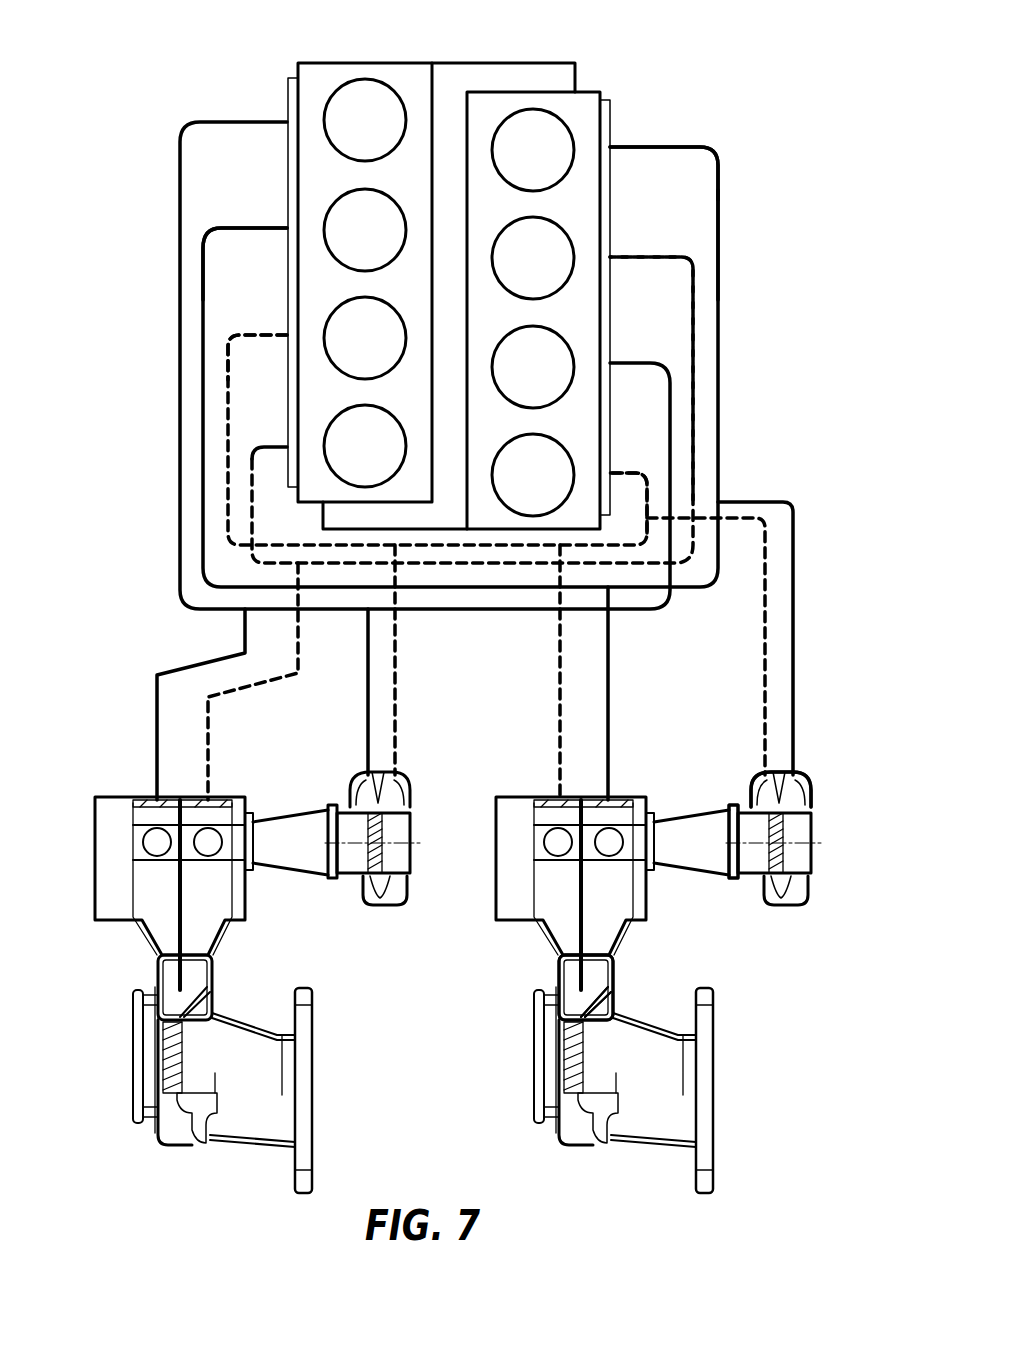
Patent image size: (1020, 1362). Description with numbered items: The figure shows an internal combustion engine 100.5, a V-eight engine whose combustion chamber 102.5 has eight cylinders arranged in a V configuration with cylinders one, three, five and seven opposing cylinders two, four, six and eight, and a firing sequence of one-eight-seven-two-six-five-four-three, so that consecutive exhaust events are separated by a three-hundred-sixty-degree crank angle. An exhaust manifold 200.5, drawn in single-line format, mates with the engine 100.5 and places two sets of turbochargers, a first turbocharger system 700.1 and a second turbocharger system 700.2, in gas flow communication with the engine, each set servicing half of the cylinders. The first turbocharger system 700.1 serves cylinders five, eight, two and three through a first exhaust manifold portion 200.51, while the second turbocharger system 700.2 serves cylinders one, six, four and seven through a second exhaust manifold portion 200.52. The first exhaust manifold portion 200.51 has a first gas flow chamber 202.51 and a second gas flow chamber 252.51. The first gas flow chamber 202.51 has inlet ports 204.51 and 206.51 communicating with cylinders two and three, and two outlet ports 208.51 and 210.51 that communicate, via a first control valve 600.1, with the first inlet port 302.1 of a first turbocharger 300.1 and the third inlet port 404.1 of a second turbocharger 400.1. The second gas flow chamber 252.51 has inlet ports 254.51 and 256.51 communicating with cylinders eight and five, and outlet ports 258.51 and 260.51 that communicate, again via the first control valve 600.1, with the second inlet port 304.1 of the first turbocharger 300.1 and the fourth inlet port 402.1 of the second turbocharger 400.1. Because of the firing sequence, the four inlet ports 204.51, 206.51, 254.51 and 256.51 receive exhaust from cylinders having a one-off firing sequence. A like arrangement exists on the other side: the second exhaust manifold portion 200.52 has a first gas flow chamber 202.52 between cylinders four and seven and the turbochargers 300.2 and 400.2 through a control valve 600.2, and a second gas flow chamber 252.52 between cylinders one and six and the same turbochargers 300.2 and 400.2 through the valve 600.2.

The internal combustion engine 100.5 is at (511, 274).
The combustion chamber 102.5 is at (508, 108).
The exhaust manifold 200.5 is at (443, 390).
The first exhaust manifold portion 200.51 is at (468, 349).
The second exhaust manifold portion 200.52 is at (250, 510).
The first gas flow chamber 202.51 is at (722, 212).
The first gas flow chamber 202.52 is at (700, 318).
The inlet port 204.51 is at (672, 147).
The inlet port 206.51 is at (248, 227).
The outlet port 208.51 is at (793, 662).
The outlet port 210.51 is at (608, 747).
The second gas flow chamber 252.51 is at (228, 405).
The second gas flow chamber 252.52 is at (178, 258).
The inlet port 254.51 is at (622, 468).
The inlet port 256.51 is at (255, 337).
The outlet port 258.51 is at (765, 630).
The outlet port 260.51 is at (560, 676).
The first turbocharger 300.1 is at (752, 849).
The first turbocharger 300.2 is at (398, 905).
The first inlet port 302.1 is at (808, 778).
The second inlet port 304.1 is at (753, 787).
The second turbocharger 400.1 is at (581, 1069).
The second turbocharger 400.2 is at (177, 1147).
The fourth inlet port 402.1 is at (572, 975).
The third inlet port 404.1 is at (597, 975).
The first control valve 600.1 is at (518, 797).
The control valve 600.2 is at (118, 797).
The first turbocharger system 700.1 is at (632, 1081).
The second turbocharger system 700.2 is at (191, 1084).